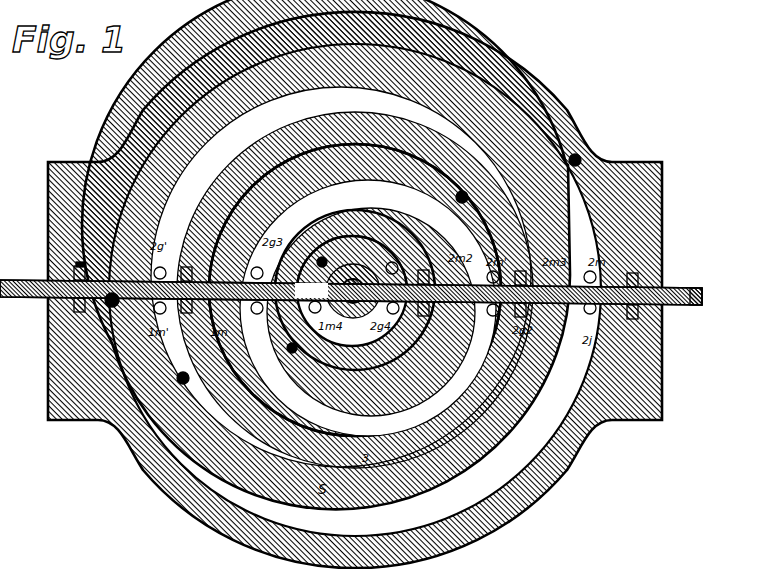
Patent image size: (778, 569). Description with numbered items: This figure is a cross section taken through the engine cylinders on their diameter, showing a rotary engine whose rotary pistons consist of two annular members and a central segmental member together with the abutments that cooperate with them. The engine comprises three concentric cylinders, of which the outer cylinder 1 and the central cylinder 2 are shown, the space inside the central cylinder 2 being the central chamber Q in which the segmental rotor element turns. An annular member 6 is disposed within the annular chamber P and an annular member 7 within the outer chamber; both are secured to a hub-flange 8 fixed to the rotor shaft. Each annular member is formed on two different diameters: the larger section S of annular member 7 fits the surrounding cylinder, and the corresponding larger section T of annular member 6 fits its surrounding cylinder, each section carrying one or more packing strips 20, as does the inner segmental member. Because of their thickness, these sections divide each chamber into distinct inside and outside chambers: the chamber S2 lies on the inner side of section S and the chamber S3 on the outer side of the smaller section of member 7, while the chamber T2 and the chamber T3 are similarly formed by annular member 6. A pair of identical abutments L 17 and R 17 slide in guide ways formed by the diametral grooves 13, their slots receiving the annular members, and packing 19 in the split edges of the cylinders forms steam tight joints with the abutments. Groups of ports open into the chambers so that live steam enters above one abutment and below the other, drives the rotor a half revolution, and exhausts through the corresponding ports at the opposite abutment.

The outer cylinder 1 is at (582, 150).
The central cylinder 2 is at (372, 287).
The annular member 6 is at (404, 150).
The annular member 7 is at (326, 266).
The hub-flange 8 is at (353, 364).
The diametral slots or grooves 13 is at (77, 249).
The abutment 17 is at (680, 287).
The packing 19 is at (628, 318).
The packing strips 20 is at (582, 161).
The section of largest diameter S is at (326, 266).
The chamber S2 is at (341, 277).
The chamber S3 is at (335, 522).
The section of largest diameter T is at (355, 294).
The chamber T2 is at (368, 308).
The chamber T3 is at (320, 434).
The annular chamber P is at (371, 312).
The central chamber Q is at (352, 350).